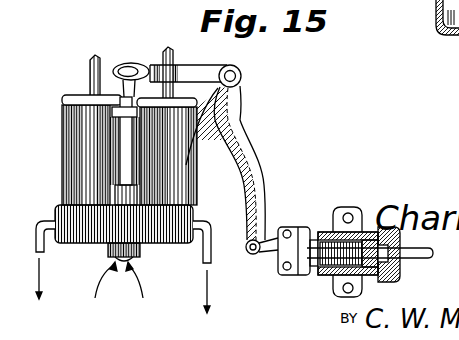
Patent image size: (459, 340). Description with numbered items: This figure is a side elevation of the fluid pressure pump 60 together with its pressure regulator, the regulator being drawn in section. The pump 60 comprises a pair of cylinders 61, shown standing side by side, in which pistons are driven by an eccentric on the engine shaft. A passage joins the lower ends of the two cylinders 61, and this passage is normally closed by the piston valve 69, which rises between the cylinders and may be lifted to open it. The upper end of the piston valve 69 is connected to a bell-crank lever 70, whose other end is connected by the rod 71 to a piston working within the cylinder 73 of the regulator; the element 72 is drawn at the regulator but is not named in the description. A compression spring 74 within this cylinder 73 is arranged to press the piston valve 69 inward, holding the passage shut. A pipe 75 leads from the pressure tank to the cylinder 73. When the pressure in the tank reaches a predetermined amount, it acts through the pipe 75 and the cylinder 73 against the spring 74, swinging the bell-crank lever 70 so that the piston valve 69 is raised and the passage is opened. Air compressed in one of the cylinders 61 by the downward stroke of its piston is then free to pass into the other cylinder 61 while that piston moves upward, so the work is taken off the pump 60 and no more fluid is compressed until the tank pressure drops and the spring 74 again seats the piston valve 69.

The fluid pressure pump 60 is at (110, 72).
The cylinders 61 is at (77, 165).
The piston valve 69 is at (122, 173).
The bell-crank lever 70 is at (202, 66).
The rod 71 is at (290, 231).
The spring housing 72 is at (362, 232).
The cylinder 73 is at (334, 274).
The compression spring 74 is at (327, 232).
The pipe 75 is at (416, 258).